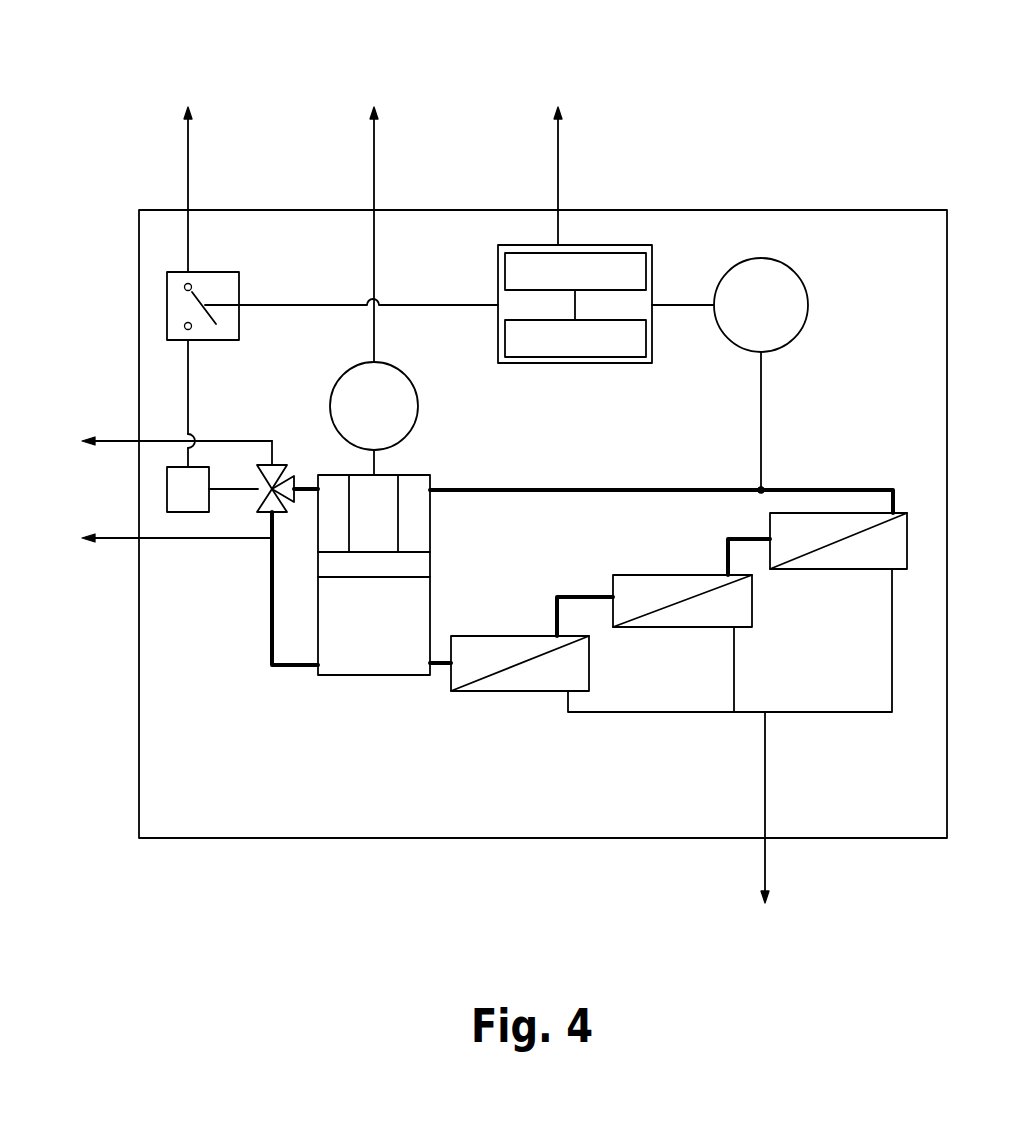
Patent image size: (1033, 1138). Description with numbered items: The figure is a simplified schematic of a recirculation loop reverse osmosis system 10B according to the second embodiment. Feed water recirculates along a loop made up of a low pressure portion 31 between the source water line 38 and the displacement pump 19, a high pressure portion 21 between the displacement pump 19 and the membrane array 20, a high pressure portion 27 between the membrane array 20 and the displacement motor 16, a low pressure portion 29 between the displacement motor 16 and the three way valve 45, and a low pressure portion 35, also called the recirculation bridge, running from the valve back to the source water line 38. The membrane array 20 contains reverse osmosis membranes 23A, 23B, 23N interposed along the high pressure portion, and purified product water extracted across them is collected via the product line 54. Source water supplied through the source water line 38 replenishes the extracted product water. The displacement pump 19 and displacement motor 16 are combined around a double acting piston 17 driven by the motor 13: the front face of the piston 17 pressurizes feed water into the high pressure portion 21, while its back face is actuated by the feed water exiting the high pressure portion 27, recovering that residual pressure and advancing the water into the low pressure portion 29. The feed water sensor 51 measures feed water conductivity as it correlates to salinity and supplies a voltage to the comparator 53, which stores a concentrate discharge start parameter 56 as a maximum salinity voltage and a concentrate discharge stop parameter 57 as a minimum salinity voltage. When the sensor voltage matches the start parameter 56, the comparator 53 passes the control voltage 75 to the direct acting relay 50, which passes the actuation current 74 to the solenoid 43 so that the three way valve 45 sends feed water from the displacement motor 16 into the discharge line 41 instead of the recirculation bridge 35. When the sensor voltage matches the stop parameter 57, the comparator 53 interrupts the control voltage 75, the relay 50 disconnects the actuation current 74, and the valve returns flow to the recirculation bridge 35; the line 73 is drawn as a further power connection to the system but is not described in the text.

The recirculation loop reverse osmosis system 10B is at (96, 64).
The actuation current 74 is at (186, 163).
The motor power line 73 is at (372, 165).
The control voltage 75 is at (556, 167).
The direct acting relay 50 is at (167, 272).
The comparator 53 is at (578, 245).
The concentrate discharge start parameter 56 is at (533, 253).
The concentrate discharge stop parameter 57 is at (518, 320).
The feed water sensor 51 is at (739, 264).
The high pressure portion 27 is at (811, 490).
The motor 13 is at (355, 368).
The displacement motor 16 is at (413, 537).
The double acting piston 17 is at (360, 566).
The displacement pump 19 is at (331, 658).
The high pressure portion 21 is at (438, 667).
The membrane array 20 is at (679, 731).
The reverse osmosis membrane 23A is at (516, 691).
The reverse osmosis membrane 23B is at (660, 627).
The reverse osmosis membrane 23N is at (852, 569).
The product line 54 is at (766, 858).
The discharge line 41 is at (132, 440).
The solenoid 43 is at (167, 488).
The source water line 38 is at (115, 540).
The three way valve 45 is at (259, 514).
The low pressure portion 35 is at (272, 516).
The low pressure portion 29 is at (292, 504).
The low pressure portion 31 is at (304, 492).